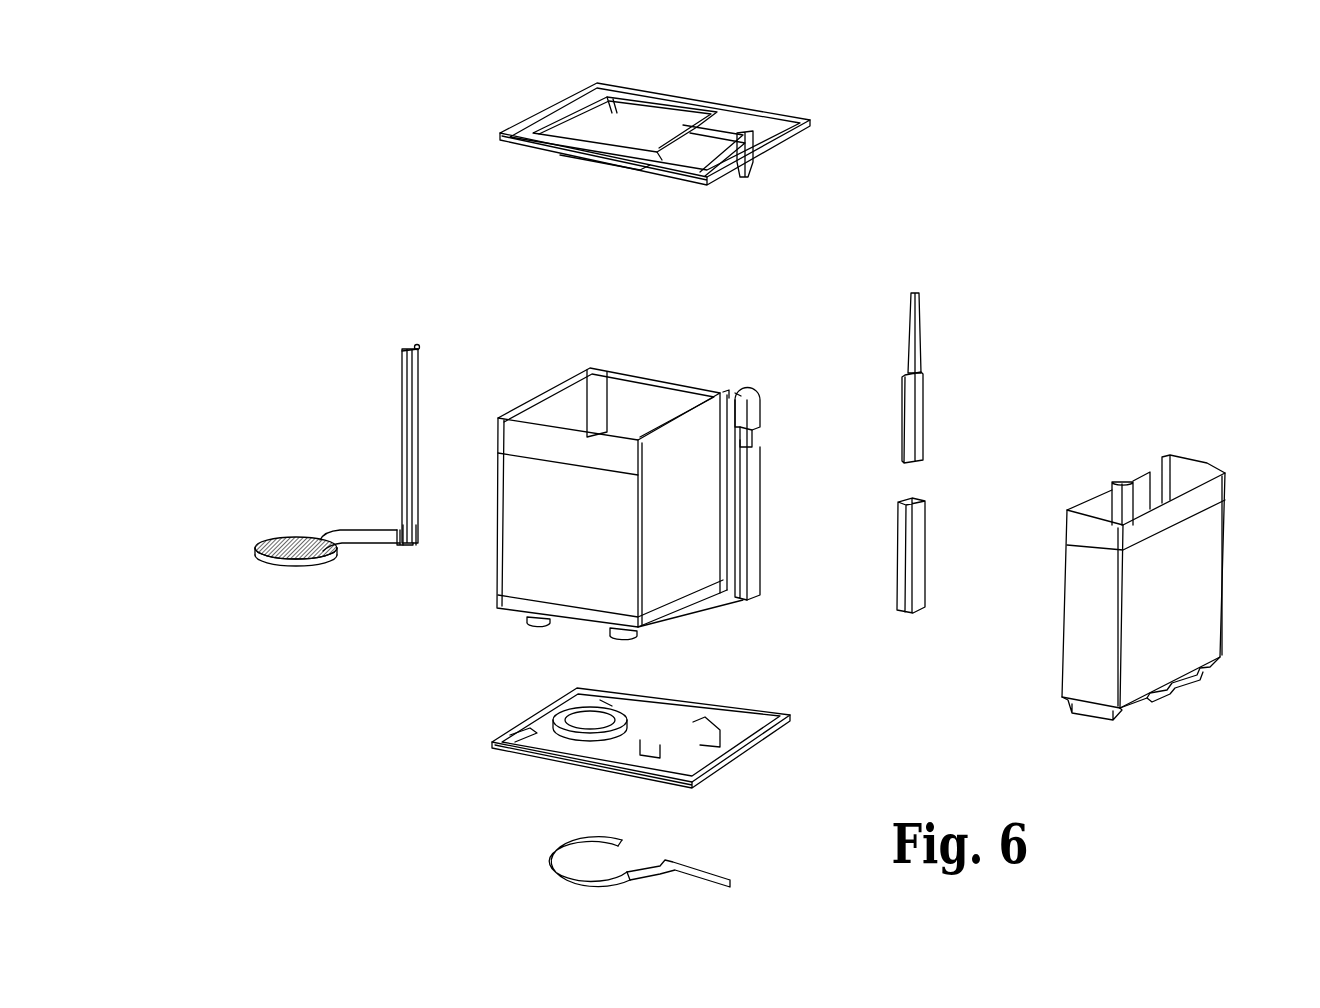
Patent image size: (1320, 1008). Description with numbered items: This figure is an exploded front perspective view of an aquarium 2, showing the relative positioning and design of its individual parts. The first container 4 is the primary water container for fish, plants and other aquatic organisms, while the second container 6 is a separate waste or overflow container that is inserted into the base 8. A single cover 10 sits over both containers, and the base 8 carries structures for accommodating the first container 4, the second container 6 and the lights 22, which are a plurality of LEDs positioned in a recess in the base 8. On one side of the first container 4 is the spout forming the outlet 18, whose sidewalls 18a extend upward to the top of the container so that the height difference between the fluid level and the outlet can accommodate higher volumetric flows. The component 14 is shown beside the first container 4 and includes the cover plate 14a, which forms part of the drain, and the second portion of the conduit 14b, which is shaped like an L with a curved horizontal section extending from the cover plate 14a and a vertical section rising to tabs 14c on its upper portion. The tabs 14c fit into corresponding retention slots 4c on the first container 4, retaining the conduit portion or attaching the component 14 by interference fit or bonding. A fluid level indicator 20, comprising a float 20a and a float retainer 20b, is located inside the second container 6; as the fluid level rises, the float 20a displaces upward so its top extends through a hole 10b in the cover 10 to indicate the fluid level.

The aquarium 2 is at (298, 110).
The first container 4 is at (562, 382).
The retention slots 4c is at (738, 397).
The second container 6 is at (1228, 522).
The base 8 is at (790, 716).
The cover 10 is at (748, 102).
The hole 10b is at (758, 142).
The component 14 is at (402, 392).
The cover plate 14a is at (268, 546).
The second portion of the conduit 14b is at (366, 530).
The tabs 14c is at (416, 345).
The outlet 18 is at (758, 436).
The sidewalls 18a is at (757, 405).
The fluid level indicator 20 is at (892, 352).
The float 20a is at (920, 375).
The float retainer 20b is at (922, 515).
The lights 22 is at (697, 872).